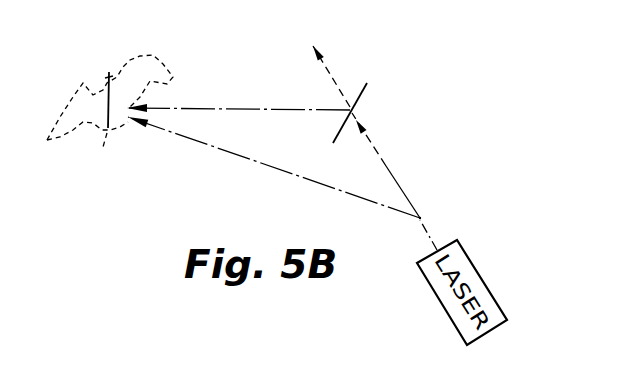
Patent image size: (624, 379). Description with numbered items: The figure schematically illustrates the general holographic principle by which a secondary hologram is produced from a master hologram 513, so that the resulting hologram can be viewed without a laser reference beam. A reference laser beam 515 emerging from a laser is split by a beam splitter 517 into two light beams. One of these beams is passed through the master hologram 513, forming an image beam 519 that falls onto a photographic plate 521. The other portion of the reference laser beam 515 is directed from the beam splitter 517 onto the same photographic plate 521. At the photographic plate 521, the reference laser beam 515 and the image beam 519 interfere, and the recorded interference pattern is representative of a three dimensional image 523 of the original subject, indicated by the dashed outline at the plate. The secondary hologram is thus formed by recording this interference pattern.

The master hologram 513 is at (367, 92).
The reference laser beam 515 is at (314, 182).
The beam splitter 517 is at (449, 206).
The image beam 519 is at (257, 108).
The photographic plate 521 is at (108, 128).
The three dimensional image 523 is at (163, 63).